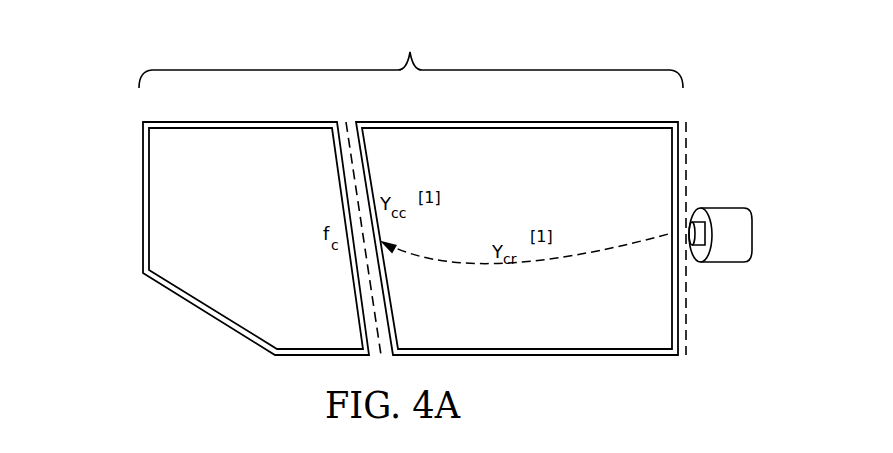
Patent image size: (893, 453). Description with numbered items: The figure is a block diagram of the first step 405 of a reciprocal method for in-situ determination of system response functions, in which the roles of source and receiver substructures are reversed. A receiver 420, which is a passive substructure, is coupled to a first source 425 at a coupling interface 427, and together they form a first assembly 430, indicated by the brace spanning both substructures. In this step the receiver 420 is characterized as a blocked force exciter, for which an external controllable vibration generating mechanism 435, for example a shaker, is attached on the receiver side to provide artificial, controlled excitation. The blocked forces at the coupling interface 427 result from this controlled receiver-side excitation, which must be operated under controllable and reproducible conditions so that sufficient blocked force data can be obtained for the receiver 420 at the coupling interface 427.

The step 405 is at (130, 122).
The receiver 420 is at (637, 355).
The first source 425 is at (213, 310).
The coupling interface 427 is at (346, 121).
The first assembly 430 is at (411, 44).
The external controllable vibration generating mechanism 435 is at (752, 232).